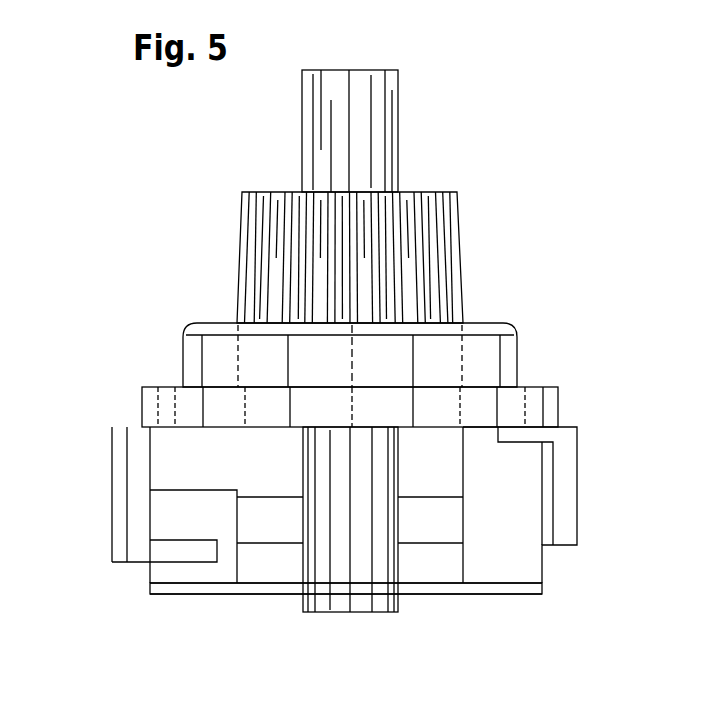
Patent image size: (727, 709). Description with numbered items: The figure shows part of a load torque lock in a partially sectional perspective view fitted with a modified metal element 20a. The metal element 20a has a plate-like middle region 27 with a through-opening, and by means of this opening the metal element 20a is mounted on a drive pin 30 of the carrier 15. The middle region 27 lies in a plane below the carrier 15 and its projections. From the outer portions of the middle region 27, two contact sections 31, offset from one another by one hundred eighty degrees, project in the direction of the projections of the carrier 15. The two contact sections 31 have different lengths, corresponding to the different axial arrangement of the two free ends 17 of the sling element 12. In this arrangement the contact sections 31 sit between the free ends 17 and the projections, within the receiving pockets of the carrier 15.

The drive pin 30 is at (363, 118).
The carrier 15 is at (524, 321).
The free ends 17 is at (510, 446).
The contact sections 31 is at (178, 517).
The sling element 12 is at (572, 481).
The middle region 27 is at (423, 586).
The metal element 20a is at (514, 586).